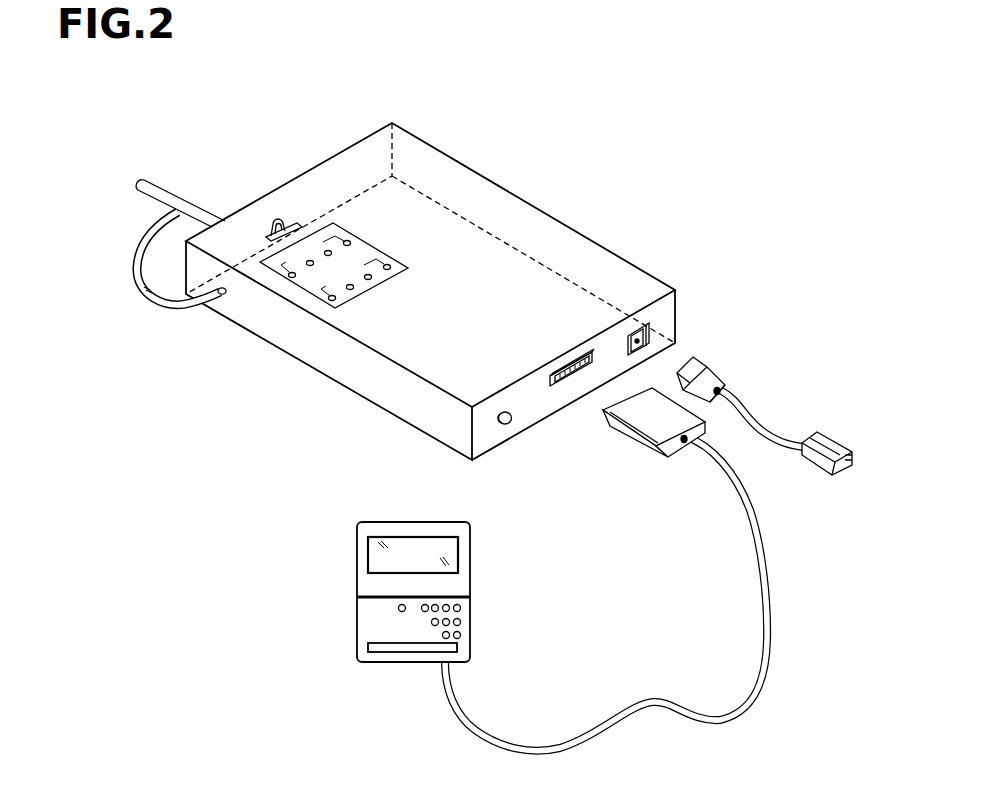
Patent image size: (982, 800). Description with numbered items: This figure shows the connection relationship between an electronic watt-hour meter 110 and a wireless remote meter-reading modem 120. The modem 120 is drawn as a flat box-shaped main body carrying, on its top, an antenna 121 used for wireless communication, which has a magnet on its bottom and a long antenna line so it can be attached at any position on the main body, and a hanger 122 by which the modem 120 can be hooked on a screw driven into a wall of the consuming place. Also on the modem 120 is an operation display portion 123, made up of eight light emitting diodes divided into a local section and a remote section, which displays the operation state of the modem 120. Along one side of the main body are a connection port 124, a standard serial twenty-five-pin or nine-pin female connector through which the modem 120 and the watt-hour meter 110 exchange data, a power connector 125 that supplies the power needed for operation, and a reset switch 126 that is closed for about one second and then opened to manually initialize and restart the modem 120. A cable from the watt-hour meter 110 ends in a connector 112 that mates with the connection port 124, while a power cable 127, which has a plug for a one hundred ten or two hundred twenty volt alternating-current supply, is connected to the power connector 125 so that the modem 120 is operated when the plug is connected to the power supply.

The electronic watt-hour meter 110 is at (471, 593).
The connector 112 is at (657, 448).
The wireless remote meter-reading modem 120 is at (347, 375).
The antenna 121 is at (152, 192).
The hanger 122 is at (277, 218).
The operation display portion 123 is at (280, 298).
The connection port 124 is at (553, 390).
The power connector 125 is at (655, 324).
The reset switch 126 is at (507, 428).
The power cable 127 is at (845, 440).